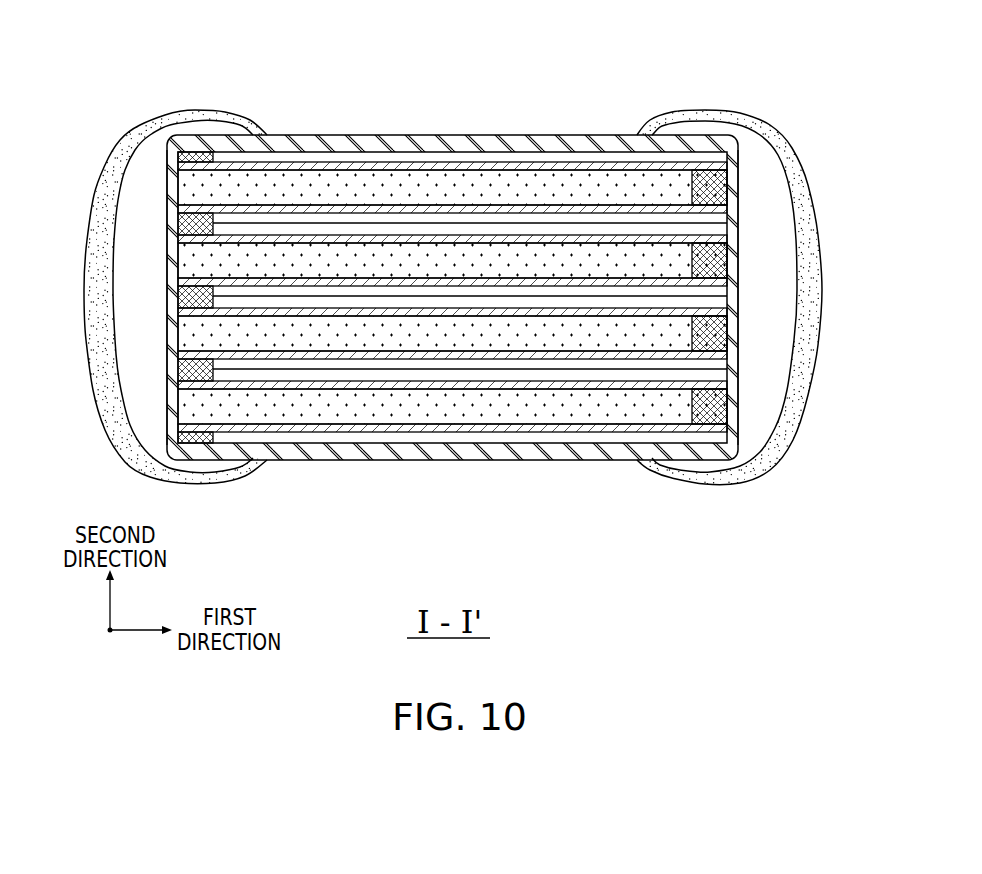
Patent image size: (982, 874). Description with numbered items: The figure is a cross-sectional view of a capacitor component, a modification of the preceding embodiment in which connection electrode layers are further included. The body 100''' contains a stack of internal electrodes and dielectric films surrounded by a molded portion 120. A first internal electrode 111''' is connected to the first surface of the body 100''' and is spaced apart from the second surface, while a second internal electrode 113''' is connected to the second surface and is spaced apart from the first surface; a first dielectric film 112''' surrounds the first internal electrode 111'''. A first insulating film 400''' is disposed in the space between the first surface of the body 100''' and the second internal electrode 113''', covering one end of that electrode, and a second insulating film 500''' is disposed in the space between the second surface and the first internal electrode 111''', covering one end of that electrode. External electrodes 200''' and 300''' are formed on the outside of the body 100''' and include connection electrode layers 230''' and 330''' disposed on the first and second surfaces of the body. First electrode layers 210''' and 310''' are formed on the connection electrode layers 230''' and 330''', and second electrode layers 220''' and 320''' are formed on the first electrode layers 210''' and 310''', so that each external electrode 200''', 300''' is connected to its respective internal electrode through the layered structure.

The body 100''' is at (462, 250).
The molded portion 120 is at (398, 148).
The first internal electrode 111''' is at (452, 232).
The first dielectric film 112''' is at (452, 236).
The second internal electrode 113''' is at (452, 239).
The first external electrode 200''' is at (154, 244).
The first electrode layer 210''' is at (177, 257).
The second electrode layer 220''' is at (154, 262).
The connection electrode layer 230''' is at (186, 243).
The second external electrode 300''' is at (748, 245).
The first electrode layer 310''' is at (726, 256).
The second electrode layer 320''' is at (748, 263).
The connection electrode layer 330''' is at (719, 243).
The first insulating film 400''' is at (121, 297).
The second insulating film 500''' is at (793, 297).